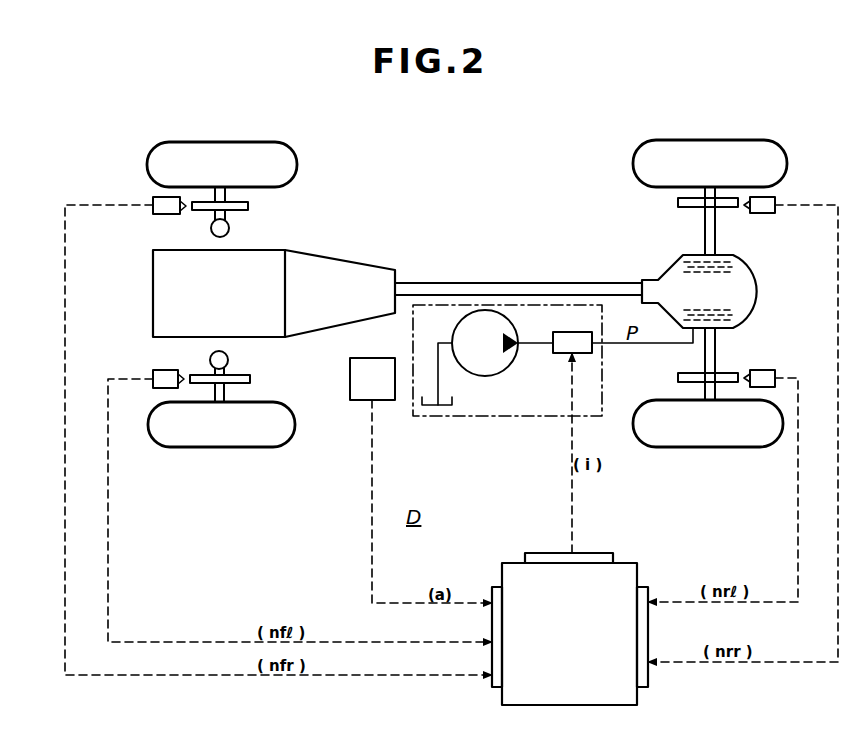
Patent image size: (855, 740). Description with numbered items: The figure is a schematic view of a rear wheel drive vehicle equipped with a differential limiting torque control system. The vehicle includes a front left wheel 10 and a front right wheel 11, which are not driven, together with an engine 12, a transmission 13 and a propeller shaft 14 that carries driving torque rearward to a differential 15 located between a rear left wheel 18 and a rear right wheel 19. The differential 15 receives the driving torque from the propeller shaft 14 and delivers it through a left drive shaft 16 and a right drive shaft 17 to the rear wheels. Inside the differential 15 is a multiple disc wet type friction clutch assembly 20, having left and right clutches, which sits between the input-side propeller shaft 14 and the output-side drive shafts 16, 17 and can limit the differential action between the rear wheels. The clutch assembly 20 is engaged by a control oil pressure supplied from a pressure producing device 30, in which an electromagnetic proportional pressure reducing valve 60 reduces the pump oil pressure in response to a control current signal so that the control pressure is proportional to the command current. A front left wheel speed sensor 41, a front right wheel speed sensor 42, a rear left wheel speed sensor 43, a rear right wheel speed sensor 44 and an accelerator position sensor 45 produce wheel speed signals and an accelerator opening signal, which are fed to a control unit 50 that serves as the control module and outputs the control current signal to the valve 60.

The front left wheel 10 is at (225, 448).
The front right wheel 11 is at (255, 144).
The engine 12 is at (271, 250).
The transmission 13 is at (355, 264).
The propeller shaft 14 is at (515, 281).
The differential 15 is at (755, 282).
The left drive shaft 16 is at (716, 352).
The right drive shaft 17 is at (716, 233).
The rear left wheel 18 is at (712, 448).
The rear right wheel 19 is at (717, 139).
The differential limiting clutch assembly 20 is at (686, 307).
The pressure producing device 30 is at (510, 419).
The front left wheel rotational speed sensor 41 is at (156, 370).
The front right wheel rotational speed sensor 42 is at (153, 210).
The rear left wheel rotational speed sensor 43 is at (773, 371).
The rear right wheel rotational speed sensor 44 is at (775, 213).
The accelerator position sensor 45 is at (351, 371).
The control unit 50 is at (637, 563).
The electromagnetic proportional pressure reducing valve 60 is at (584, 354).